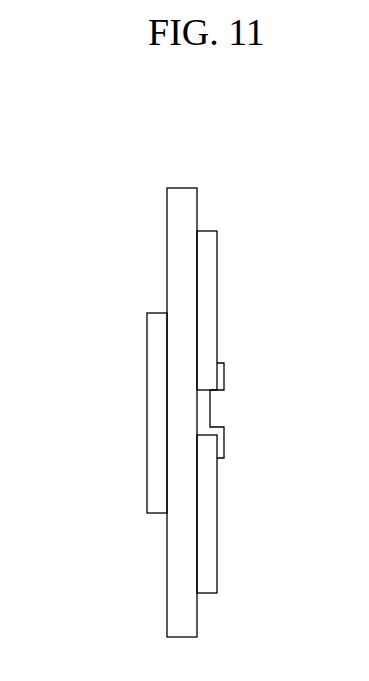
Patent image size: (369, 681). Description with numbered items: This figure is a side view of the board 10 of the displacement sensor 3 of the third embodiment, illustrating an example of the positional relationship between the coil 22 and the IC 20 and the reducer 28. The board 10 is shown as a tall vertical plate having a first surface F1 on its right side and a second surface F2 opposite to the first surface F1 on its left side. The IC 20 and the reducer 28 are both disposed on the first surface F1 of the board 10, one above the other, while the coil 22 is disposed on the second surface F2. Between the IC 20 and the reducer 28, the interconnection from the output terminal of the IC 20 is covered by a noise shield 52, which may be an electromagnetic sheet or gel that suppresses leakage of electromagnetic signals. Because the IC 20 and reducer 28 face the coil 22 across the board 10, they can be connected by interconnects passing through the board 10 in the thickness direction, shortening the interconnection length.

The displacement sensor 3 is at (240, 181).
The board 10 is at (185, 187).
The IC 20 is at (218, 293).
The coil 22 is at (148, 403).
The reducer 28 is at (217, 512).
The noise shield 52 is at (213, 425).
The first surface F1 is at (197, 613).
The second surface F2 is at (167, 612).